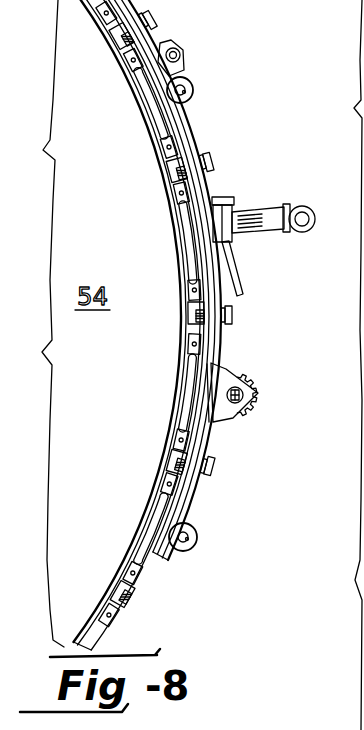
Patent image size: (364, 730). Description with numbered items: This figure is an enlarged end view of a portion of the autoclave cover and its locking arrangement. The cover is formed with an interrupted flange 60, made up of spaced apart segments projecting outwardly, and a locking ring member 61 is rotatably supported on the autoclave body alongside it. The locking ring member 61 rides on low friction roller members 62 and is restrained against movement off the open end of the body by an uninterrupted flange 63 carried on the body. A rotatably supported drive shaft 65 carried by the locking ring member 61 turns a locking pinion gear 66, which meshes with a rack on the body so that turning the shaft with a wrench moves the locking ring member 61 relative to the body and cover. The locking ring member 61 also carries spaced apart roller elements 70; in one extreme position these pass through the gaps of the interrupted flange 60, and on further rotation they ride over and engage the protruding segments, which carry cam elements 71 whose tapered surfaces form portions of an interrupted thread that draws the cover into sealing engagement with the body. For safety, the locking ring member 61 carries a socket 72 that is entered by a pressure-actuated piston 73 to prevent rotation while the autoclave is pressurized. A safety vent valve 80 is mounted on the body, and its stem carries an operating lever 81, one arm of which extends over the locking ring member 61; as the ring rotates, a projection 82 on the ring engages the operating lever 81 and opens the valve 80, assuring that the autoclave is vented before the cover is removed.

The interrupted flange 60 is at (143, 108).
The locking ring member 61 is at (201, 445).
The roller members 62 is at (194, 82).
The uninterrupted flange 63 is at (158, 122).
The drive shaft 65 is at (257, 397).
The locking pinion gear 66 is at (257, 384).
The roller elements 70 is at (112, 44).
The cam elements 71 is at (100, 26).
The socket 72 is at (177, 45).
The piston 73 is at (181, 52).
The safety vent valve 80 is at (235, 216).
The operating lever 81 is at (246, 269).
The projection 82 is at (217, 199).